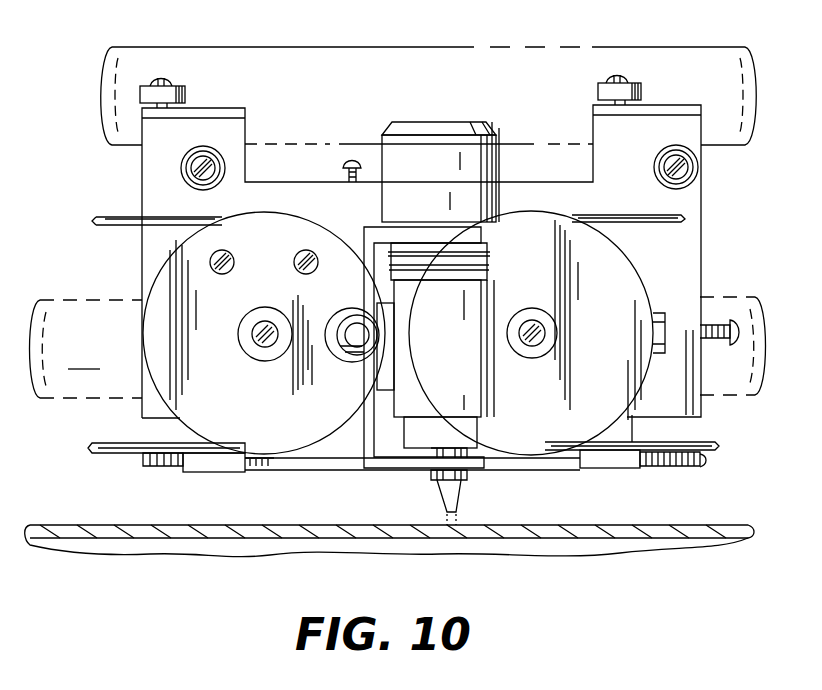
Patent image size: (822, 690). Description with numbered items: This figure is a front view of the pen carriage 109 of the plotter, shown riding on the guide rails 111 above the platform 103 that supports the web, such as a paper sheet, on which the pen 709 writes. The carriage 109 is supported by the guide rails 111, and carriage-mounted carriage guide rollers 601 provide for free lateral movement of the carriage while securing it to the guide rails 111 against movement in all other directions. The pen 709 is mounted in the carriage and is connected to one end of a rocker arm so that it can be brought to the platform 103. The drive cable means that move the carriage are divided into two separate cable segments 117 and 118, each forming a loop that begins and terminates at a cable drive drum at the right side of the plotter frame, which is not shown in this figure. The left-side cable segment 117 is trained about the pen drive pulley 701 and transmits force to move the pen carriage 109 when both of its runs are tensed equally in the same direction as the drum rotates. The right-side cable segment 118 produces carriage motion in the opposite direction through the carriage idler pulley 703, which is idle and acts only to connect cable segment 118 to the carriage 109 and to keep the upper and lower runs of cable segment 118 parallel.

The platform 103 is at (673, 525).
The pen carriage 109 is at (150, 168).
The guide rails 111 is at (580, 50).
The left-side cable segment 117 is at (103, 217).
The right-side cable segment 118 is at (670, 215).
The carriage guide rollers 601 is at (185, 90).
The pen drive pulley 701 is at (163, 290).
The carriage idler pulley 703 is at (625, 287).
The pen 709 is at (452, 355).